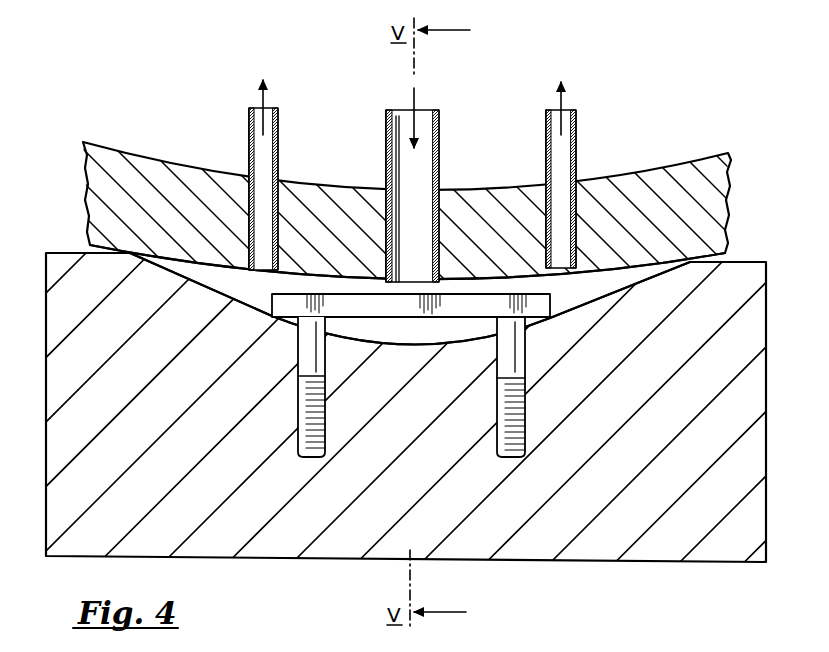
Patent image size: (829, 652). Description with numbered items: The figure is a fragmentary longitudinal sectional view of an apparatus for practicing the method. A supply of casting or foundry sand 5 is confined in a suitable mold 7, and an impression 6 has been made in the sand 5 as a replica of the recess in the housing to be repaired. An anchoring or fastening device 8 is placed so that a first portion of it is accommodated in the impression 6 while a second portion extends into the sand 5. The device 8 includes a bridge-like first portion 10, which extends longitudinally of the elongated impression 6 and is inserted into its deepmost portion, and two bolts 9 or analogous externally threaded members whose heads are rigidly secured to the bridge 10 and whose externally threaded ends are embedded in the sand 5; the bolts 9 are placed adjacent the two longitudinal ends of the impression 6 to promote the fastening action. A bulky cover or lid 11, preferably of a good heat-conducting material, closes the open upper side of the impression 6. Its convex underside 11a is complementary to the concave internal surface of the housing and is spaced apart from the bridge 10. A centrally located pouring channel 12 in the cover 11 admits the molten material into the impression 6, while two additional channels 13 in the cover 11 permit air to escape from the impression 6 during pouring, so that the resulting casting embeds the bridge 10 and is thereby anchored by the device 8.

The casting sand 5 is at (64, 317).
The impression 6 is at (593, 294).
The mold 7 is at (414, 175).
The anchoring device 8 is at (295, 345).
The bolts 9 is at (298, 412).
The bridge-like first portion 10 is at (392, 307).
The cover 11 is at (696, 185).
The underside of the cover 11a is at (173, 257).
The pouring channel 12 is at (427, 162).
The additional channels 13 is at (256, 152).